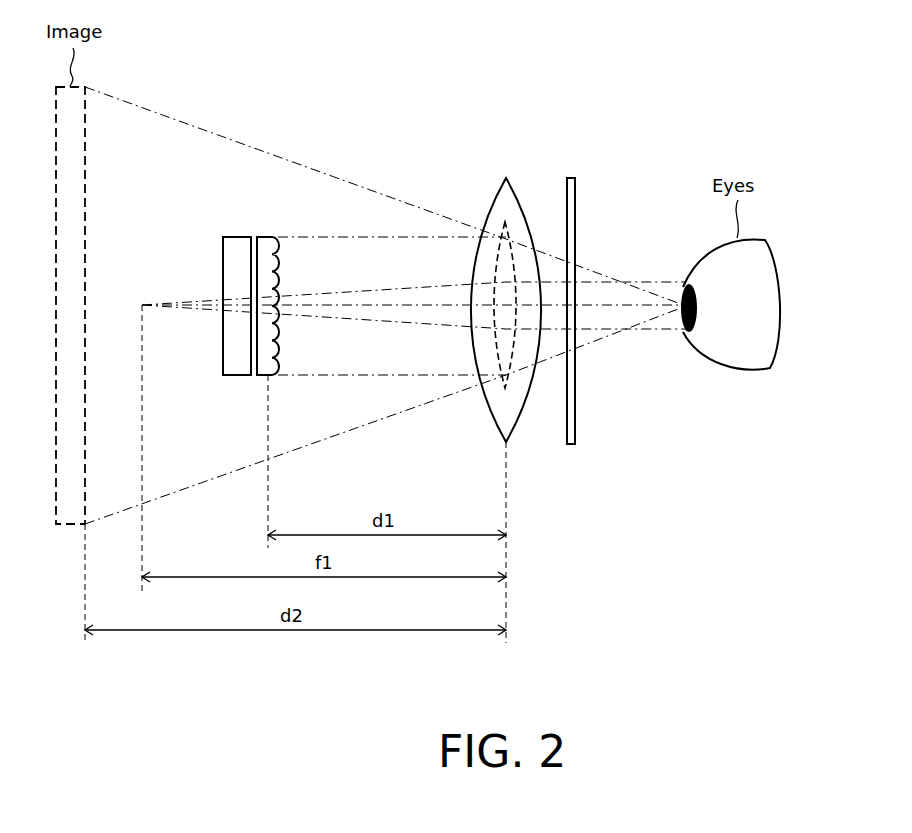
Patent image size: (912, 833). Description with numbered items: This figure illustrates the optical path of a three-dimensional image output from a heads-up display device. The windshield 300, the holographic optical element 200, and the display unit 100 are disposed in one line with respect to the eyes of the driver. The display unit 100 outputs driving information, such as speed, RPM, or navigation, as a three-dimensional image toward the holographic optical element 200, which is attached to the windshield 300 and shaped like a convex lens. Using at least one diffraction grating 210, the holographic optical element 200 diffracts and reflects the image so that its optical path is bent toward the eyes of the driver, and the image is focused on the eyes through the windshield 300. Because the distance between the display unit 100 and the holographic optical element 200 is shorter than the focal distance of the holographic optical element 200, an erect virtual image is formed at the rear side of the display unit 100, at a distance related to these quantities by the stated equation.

The display unit 100 is at (246, 226).
The holographic optical element 200 is at (506, 178).
The diffraction grating 210 is at (495, 255).
The windshield 300 is at (571, 178).